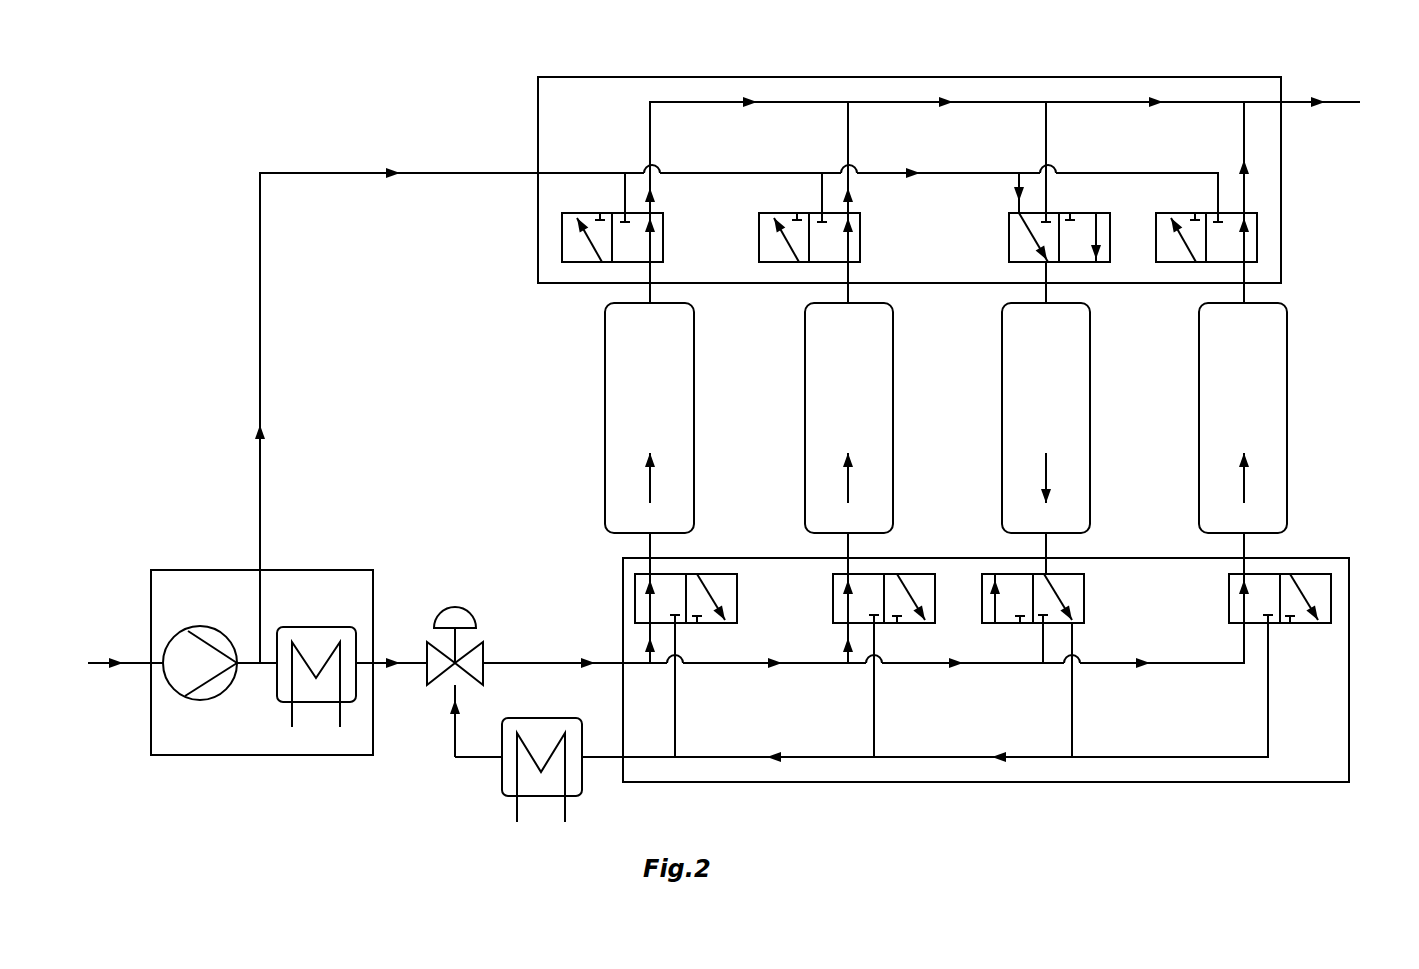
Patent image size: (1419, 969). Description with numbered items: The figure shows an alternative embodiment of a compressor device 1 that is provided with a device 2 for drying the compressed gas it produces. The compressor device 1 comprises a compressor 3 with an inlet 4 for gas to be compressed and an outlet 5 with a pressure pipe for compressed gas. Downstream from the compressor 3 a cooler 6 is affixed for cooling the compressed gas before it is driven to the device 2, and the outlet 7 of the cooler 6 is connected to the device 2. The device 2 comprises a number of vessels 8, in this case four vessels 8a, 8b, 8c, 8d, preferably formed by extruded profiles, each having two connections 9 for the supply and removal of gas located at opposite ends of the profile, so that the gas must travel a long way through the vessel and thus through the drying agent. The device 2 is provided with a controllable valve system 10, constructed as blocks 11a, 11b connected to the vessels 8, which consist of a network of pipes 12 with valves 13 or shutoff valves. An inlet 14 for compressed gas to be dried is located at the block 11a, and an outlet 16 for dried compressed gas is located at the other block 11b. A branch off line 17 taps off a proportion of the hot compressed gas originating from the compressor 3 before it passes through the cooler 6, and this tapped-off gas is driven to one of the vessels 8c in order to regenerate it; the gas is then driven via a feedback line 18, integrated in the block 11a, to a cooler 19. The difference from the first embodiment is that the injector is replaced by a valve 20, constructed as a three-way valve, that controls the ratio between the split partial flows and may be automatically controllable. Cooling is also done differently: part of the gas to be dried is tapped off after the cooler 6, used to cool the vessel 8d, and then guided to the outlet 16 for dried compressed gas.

The compressor device 1 is at (163, 128).
The device for drying compressed gas 2 is at (1360, 748).
The compressor 3 is at (200, 627).
The inlet 4 is at (107, 662).
The outlet 5 is at (248, 660).
The cooler 6 is at (347, 703).
The outlet of the cooler 7 is at (382, 666).
The vessels 8 is at (545, 430).
The vessel 8a is at (620, 378).
The vessel 8b is at (820, 378).
The vessel 8c is at (1023, 378).
The vessel 8d is at (1217, 378).
The connections 9 is at (649, 297).
The controllable valve system 10 is at (1293, 277).
The block 11a is at (623, 782).
The block 11b is at (538, 98).
The pipes 12 is at (883, 172).
The valves 13 is at (570, 248).
The inlet 14 is at (623, 663).
The outlet 16 is at (1283, 101).
The branch off line 17 is at (260, 318).
The feedback line 18 is at (941, 758).
The cooler 19 is at (498, 785).
The valve 20 is at (433, 650).